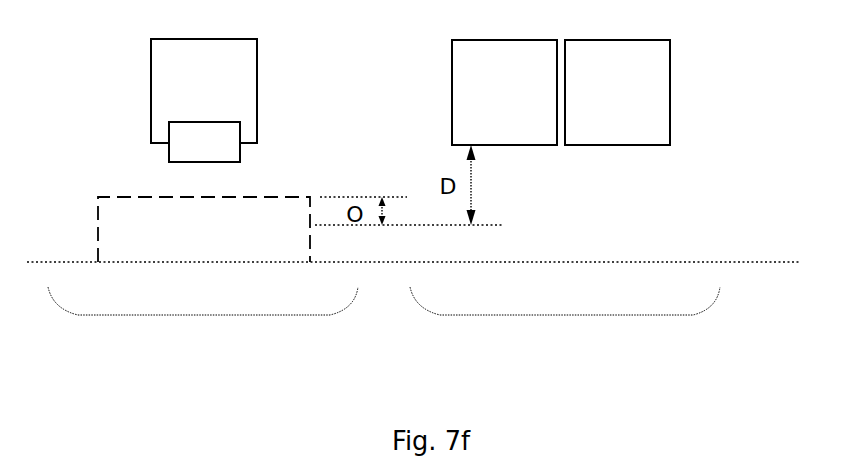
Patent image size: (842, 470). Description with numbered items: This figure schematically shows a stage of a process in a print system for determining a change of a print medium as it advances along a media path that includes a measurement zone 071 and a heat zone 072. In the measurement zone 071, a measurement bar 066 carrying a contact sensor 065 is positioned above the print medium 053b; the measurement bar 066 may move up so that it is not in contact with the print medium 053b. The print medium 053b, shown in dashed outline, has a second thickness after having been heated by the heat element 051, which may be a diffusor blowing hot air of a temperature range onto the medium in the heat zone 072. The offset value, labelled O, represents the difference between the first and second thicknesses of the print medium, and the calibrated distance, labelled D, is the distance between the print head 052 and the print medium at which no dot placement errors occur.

The measurement bar 066 is at (204, 91).
The contact sensor 065 is at (204, 142).
The print head 052 is at (504, 92).
The heat element 051 is at (617, 92).
The print medium 053b is at (204, 229).
The measurement zone 071 is at (203, 315).
The heat zone 072 is at (566, 315).